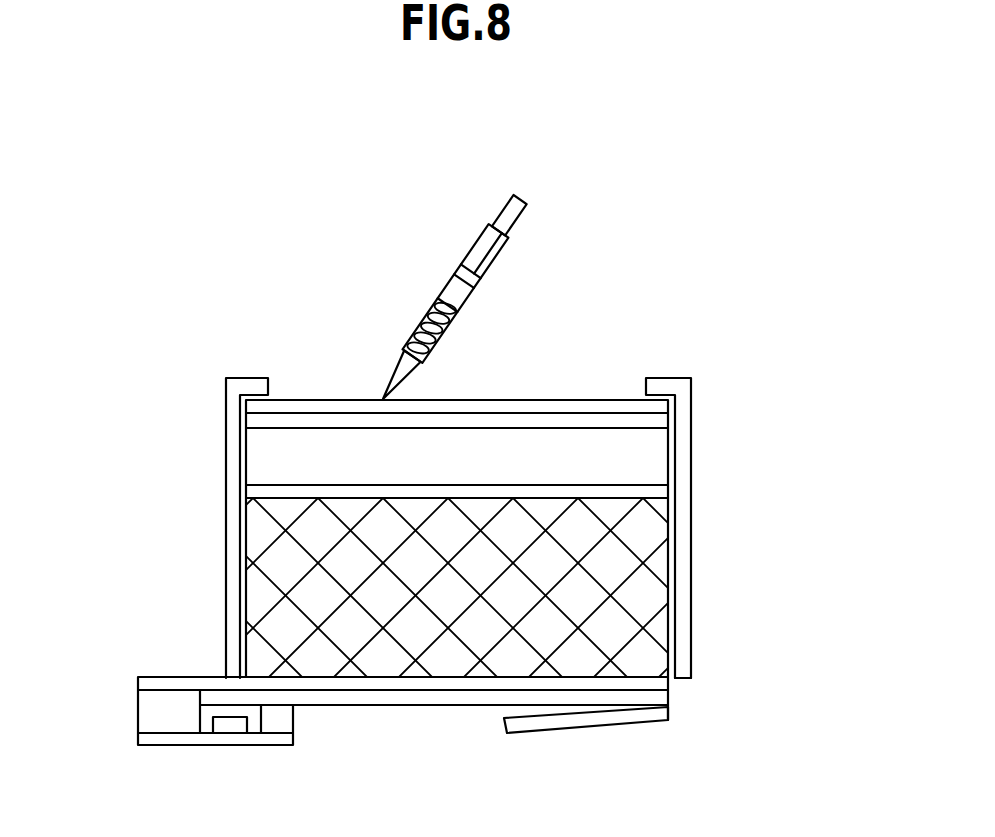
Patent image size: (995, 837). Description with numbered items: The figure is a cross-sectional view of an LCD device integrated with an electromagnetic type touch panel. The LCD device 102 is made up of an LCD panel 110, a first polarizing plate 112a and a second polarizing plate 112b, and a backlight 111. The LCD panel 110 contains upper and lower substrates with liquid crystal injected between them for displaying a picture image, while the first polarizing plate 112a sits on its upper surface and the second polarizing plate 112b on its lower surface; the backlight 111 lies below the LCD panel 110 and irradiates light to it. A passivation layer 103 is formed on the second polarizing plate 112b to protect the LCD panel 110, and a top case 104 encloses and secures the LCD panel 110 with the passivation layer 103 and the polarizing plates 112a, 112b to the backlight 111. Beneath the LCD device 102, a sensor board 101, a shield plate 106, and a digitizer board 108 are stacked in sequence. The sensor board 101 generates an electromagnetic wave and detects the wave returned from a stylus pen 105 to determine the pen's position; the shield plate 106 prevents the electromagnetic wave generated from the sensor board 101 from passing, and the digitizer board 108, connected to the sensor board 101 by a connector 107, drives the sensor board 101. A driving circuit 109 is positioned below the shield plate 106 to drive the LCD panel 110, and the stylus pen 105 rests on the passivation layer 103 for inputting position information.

The sensor board 101 is at (165, 680).
The LCD device 102 is at (484, 544).
The passivation layer 103 is at (304, 407).
The top case 104 is at (234, 533).
The stylus pen 105 is at (505, 237).
The shield plate 106 is at (662, 700).
The connector 107 is at (148, 714).
The digitizer board 108 is at (293, 740).
The driving circuit 109 is at (616, 720).
The LCD panel 110 is at (655, 459).
The backlight 111 is at (456, 587).
The first polarizing plate 112a is at (655, 496).
The second polarizing plate 112b is at (655, 423).